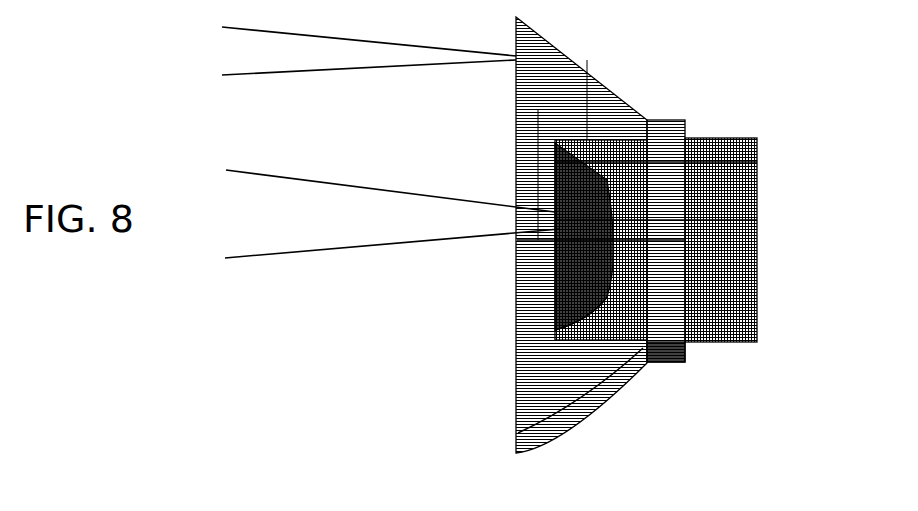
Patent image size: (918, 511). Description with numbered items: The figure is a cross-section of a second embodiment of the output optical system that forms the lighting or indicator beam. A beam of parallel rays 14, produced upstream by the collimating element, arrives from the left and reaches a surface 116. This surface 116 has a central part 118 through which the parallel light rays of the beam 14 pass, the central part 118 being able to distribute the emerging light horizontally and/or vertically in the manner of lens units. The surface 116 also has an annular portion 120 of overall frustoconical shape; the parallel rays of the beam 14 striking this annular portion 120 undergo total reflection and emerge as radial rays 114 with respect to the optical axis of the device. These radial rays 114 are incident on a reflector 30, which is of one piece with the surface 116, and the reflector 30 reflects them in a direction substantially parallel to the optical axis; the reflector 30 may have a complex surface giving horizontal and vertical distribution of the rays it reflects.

The beam of parallel rays 14 is at (733, 223).
The reflector 30 is at (583, 417).
The radial rays 114 is at (590, 118).
The surface 116 is at (565, 258).
The central part 118 is at (622, 248).
The annular portion 120 is at (592, 312).